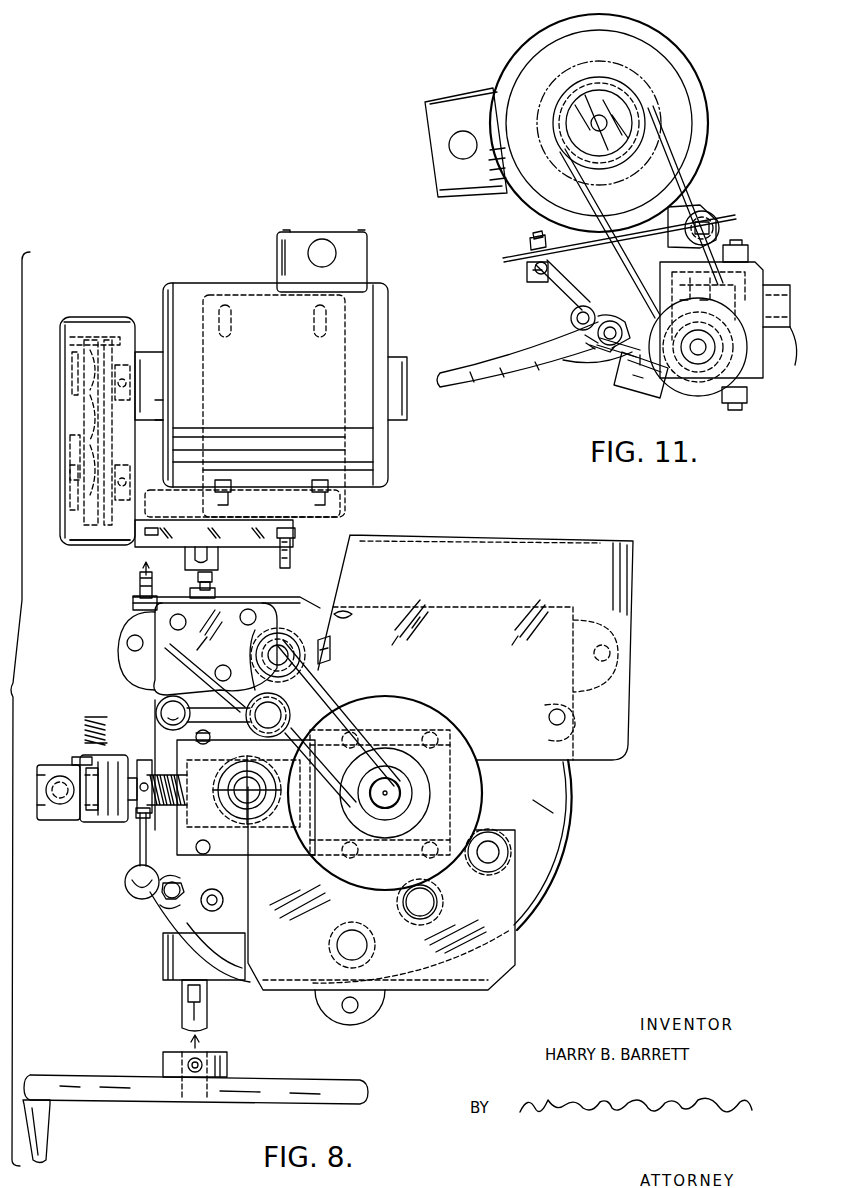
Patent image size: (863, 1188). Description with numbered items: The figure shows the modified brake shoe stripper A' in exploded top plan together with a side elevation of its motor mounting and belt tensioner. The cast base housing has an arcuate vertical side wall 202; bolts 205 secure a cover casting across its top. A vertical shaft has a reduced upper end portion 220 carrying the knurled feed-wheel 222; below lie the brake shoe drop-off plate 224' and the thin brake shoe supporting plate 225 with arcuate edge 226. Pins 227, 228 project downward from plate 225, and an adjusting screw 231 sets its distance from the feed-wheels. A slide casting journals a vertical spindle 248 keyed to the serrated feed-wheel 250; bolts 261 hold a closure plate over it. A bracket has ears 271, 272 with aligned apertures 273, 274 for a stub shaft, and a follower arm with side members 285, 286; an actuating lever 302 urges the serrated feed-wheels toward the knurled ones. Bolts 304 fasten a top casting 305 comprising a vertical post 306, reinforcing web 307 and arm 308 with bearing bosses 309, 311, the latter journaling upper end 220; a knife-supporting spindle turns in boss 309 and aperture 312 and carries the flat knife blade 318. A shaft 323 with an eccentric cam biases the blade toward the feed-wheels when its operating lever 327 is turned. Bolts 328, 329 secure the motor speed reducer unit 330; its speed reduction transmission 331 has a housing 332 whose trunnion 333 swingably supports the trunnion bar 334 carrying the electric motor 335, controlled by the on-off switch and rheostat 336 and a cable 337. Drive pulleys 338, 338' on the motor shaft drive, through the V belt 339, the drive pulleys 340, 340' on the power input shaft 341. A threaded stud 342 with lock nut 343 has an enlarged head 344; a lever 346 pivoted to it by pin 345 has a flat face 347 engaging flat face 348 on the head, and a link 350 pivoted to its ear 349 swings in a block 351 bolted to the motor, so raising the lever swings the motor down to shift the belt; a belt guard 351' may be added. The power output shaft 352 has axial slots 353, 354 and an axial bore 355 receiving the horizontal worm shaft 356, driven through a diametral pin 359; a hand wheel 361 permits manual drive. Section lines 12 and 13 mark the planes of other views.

In FIG. 8, the arcuate vertical side wall 202 is at (560, 873).
In FIG. 8, the bolts 205 is at (557, 710).
In FIG. 8, the reduced upper end portion 220 is at (378, 796).
In FIG. 8, the circular feed-wheel 222 is at (438, 722).
In FIG. 8, the brake shoe drop-off plate 224' is at (504, 647).
In FIG. 8, the brake shoe supporting plate 225 is at (503, 966).
In FIG. 8, the arcuate edge 226 is at (322, 860).
In FIG. 8, the pin 227 is at (338, 946).
In FIG. 8, the pin 228 is at (489, 863).
In FIG. 8, the adjusting screw 231 is at (420, 912).
In FIG. 8, the vertical spindle 248 is at (242, 806).
In FIG. 8, the coarsely serrated feed-wheel 250 is at (305, 832).
In FIG. 8, the bolts 261 is at (210, 737).
In FIG. 8, the ear 271 is at (57, 770).
In FIG. 8, the ear 272 is at (50, 815).
In FIG. 8, the aperture 273 is at (64, 760).
In FIG. 8, the aperture 274 is at (110, 824).
In FIG. 8, the side member 285 is at (124, 757).
In FIG. 8, the side member 286 is at (108, 824).
In FIG. 8, the actuating lever 302 is at (126, 882).
In FIG. 8, the bolts 304 is at (183, 618).
In FIG. 8, the top casting 305 is at (153, 689).
In FIG. 8, the vertical post 306 is at (270, 645).
In FIG. 8, the reinforcing web 307 is at (200, 660).
In FIG. 8, the arm 308 is at (330, 690).
In FIG. 8, the bearing boss 309 is at (340, 620).
In FIG. 8, the bearing boss 311 is at (420, 790).
In FIG. 8, the bearing-forming aperture 312 is at (262, 652).
In FIG. 8, the flat knife blade 318 is at (318, 642).
In FIG. 8, the shaft 323 is at (262, 700).
In FIG. 8, the operating lever 327 is at (158, 708).
In FIG. 8, the bolt 328 is at (140, 584).
In FIG. 8, the bolt 329 is at (294, 533).
In FIG. 8, the motor speed reducer unit 330 is at (102, 309).
In FIG. 11, the speed reduction transmission 331 is at (668, 272).
In FIG. 11, the transmission housing 332 is at (640, 380).
In FIG. 11, the trunnion 333 is at (714, 215).
In FIG. 8, the trunnion 333 is at (158, 535).
In FIG. 11, the trunnion bar 334 is at (720, 229).
In FIG. 8, the trunnion bar 334 is at (345, 492).
In FIG. 11, the electric motor 335 is at (680, 75).
In FIG. 8, the electric motor 335 is at (382, 295).
In FIG. 11, the on-off switch and rheostat 336 is at (435, 123).
In FIG. 8, the on-off switch and rheostat 336 is at (330, 238).
In FIG. 8, the cable 337 is at (88, 716).
In FIG. 8, the drive pulley 338 is at (77, 372).
In FIG. 8, the drive pulley 338' is at (72, 335).
In FIG. 11, the V belt 339 is at (583, 203).
In FIG. 8, the V belt 339 is at (68, 519).
In FIG. 8, the drive pulley 340 is at (52, 454).
In FIG. 8, the drive pulley 340' is at (77, 481).
In FIG. 11, the power input shaft 341 is at (700, 358).
In FIG. 8, the power input shaft 341 is at (68, 489).
In FIG. 11, the threaded stud 342 is at (618, 352).
In FIG. 11, the lock nut 343 is at (628, 356).
In FIG. 11, the enlarged head 344 is at (603, 341).
In FIG. 11, the pin 345 is at (598, 333).
In FIG. 11, the lever 346 is at (480, 372).
In FIG. 11, the flat face 347 is at (580, 336).
In FIG. 11, the flat face 348 is at (583, 344).
In FIG. 11, the ear 349 is at (586, 307).
In FIG. 11, the link 350 is at (548, 292).
In FIG. 11, the block 351 is at (609, 248).
In FIG. 8, the belt guard 351' is at (77, 553).
In FIG. 11, the power output shaft 352 is at (785, 287).
In FIG. 8, the power output shaft 352 is at (218, 562).
In FIG. 11, the axial slot 353 is at (748, 250).
In FIG. 8, the axial slot 353 is at (198, 578).
In FIG. 11, the axial slot 354 is at (785, 381).
In FIG. 8, the axial slot 354 is at (200, 588).
In FIG. 11, the axial bore 355 is at (800, 365).
In FIG. 8, the horizontal worm shaft 356 is at (215, 591).
In FIG. 8, the diametrally extending pin 359 is at (133, 601).
In FIG. 8, the hand wheel 361 is at (318, 1085).
In FIG. 8, the section line 12- 12 is at (668, 794).
In FIG. 8, the section line 13- 13 is at (320, 563).
In FIG. 8, the brake shoe stripper A' is at (666, 689).